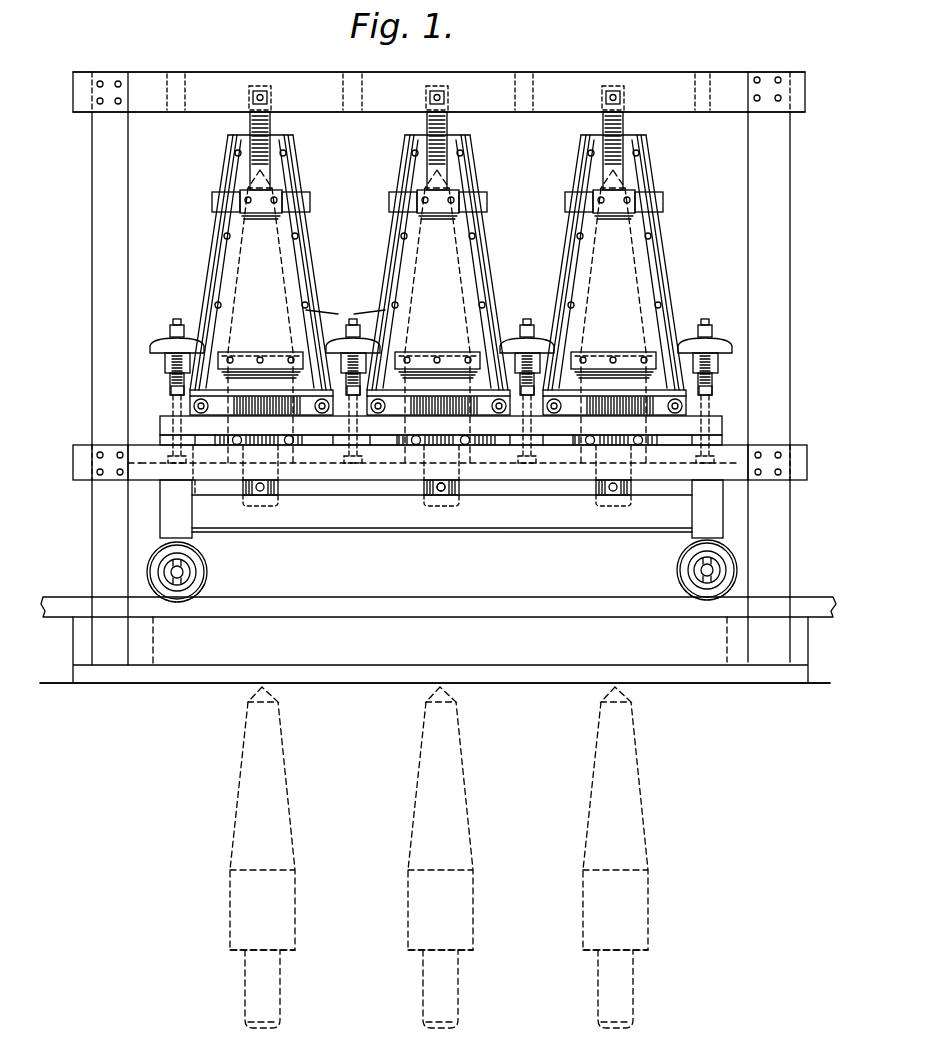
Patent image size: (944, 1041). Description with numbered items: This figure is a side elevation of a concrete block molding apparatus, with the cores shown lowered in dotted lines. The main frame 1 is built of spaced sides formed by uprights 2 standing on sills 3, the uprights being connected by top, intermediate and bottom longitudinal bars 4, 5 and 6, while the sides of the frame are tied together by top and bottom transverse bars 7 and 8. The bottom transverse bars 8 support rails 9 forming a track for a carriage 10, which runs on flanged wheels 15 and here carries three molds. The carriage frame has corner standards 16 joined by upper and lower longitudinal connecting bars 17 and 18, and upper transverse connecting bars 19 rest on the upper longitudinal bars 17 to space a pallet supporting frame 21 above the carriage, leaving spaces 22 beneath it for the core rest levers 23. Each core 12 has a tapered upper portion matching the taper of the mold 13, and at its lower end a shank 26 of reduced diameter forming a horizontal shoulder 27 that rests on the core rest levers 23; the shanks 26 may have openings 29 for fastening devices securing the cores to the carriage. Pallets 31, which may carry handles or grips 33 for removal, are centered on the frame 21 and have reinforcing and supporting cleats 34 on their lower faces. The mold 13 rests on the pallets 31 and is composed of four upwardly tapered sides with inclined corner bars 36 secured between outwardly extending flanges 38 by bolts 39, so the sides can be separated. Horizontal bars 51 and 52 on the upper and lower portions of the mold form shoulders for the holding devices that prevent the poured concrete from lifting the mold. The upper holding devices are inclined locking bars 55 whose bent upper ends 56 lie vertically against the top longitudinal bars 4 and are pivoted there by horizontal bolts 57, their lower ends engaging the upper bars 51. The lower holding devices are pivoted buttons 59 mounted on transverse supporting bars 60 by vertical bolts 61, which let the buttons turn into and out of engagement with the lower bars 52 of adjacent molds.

The main frame 1 is at (562, 70).
The uprights 2 is at (92, 244).
The sills 3 is at (536, 683).
The top longitudinal bar 4 is at (208, 117).
The intermediate longitudinal bar 5 is at (82, 481).
The bottom longitudinal bar 6 is at (435, 650).
The top transverse bar 7 is at (346, 98).
The bottom transverse bar 8 is at (346, 643).
The rails 9 is at (315, 607).
The carriage 10 is at (420, 532).
The cores 12 is at (262, 402).
The mold 13 is at (260, 262).
The wheels 15 is at (208, 574).
The corner standards 16 is at (170, 527).
The upper longitudinal connecting bars 17 is at (402, 465).
The lower longitudinal connecting bars 18 is at (442, 511).
The upper transverse connecting bars 19 is at (160, 430).
The pallet supporting frame 21 is at (436, 429).
The spaces 22 is at (323, 447).
The core rest levers 23 is at (289, 447).
The shank 26 is at (245, 497).
The horizontal shoulder 27 is at (241, 955).
The openings 29 is at (425, 494).
The pallets 31 is at (190, 400).
The handles or grips 33 is at (498, 416).
The reinforcing and supporting cleats 34 is at (252, 374).
The inclined corner bars 36 is at (215, 268).
The outwardly extending flanges 38 is at (345, 314).
The bolts 39 is at (294, 239).
The upper horizontal bar 51 is at (413, 210).
The lower horizontal bar 52 is at (246, 360).
The inclined locking bars 55 is at (262, 166).
The upper ends 56 is at (272, 103).
The horizontal bolts 57 is at (253, 97).
The pivoted buttons 59 is at (168, 345).
The transverse supporting bars 60 is at (170, 378).
The vertical bolts 61 is at (171, 391).